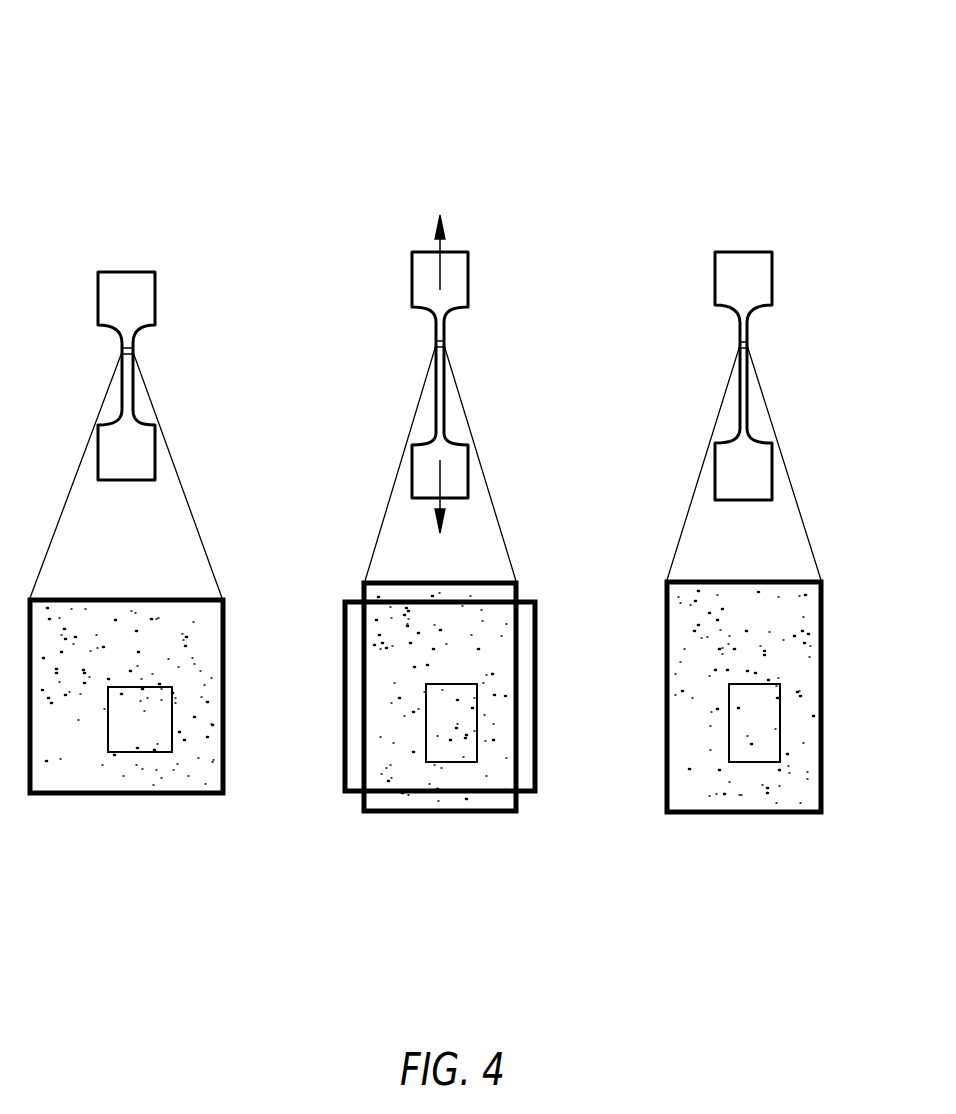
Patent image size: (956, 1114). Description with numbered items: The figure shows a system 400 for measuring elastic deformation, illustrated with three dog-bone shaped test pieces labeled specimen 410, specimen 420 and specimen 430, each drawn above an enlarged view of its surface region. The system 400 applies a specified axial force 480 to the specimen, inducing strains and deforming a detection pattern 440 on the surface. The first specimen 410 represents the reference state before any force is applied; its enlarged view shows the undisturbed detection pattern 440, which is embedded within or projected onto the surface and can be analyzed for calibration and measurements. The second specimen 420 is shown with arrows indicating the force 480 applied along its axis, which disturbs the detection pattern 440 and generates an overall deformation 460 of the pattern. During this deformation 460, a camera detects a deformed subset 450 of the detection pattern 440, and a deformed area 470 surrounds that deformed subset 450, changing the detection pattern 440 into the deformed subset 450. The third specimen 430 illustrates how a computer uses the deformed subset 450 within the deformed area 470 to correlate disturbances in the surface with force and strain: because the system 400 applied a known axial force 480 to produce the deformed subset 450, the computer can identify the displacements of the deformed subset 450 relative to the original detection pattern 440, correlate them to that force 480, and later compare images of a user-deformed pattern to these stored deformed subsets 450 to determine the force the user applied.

The system for measuring elastic deformation 400 is at (180, 74).
The specimen 410 is at (103, 272).
The specimen 420 is at (420, 250).
The specimen 430 is at (726, 252).
The detection pattern 440 is at (160, 755).
The deformed subset 450 is at (466, 765).
The deformation 460 is at (343, 657).
The deformed area 470 is at (393, 814).
The force 480 is at (446, 517).